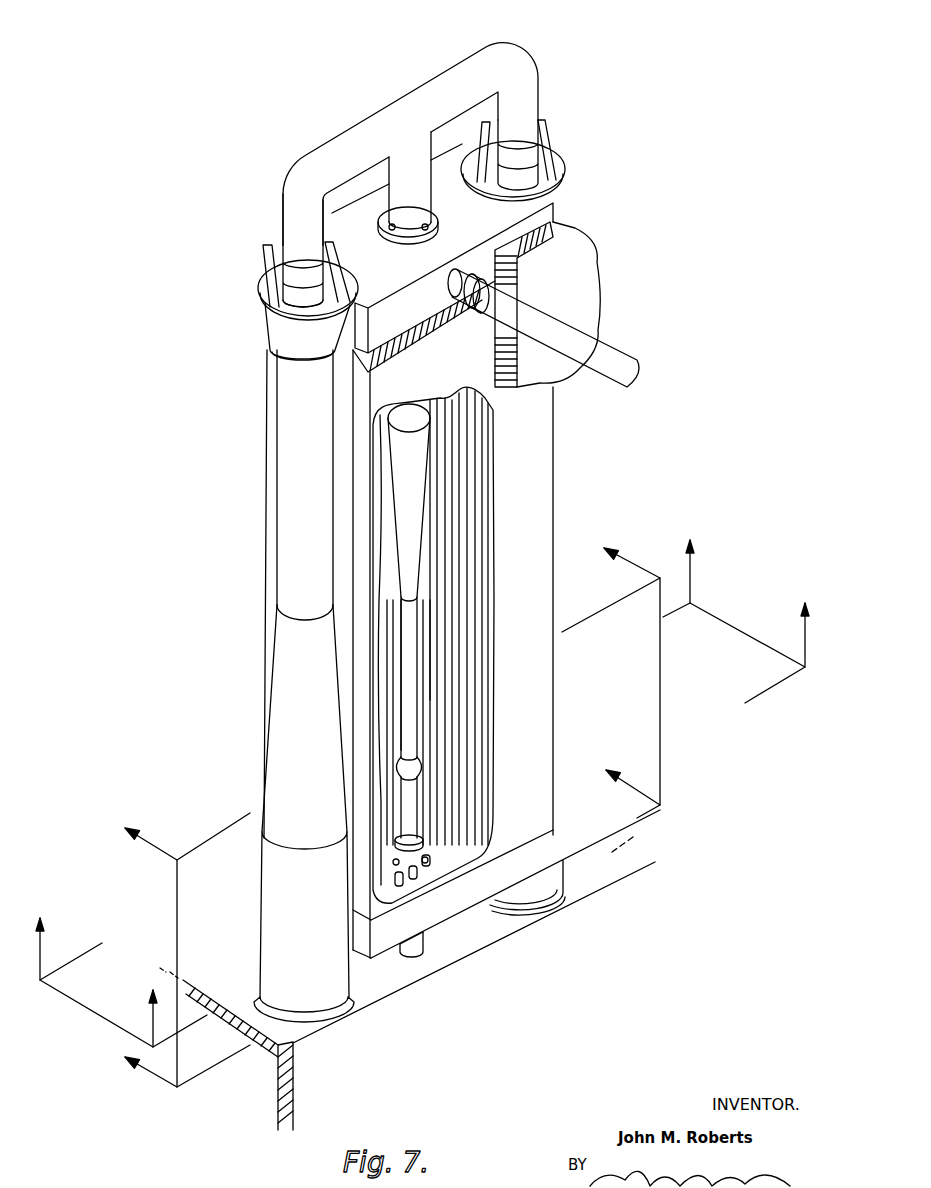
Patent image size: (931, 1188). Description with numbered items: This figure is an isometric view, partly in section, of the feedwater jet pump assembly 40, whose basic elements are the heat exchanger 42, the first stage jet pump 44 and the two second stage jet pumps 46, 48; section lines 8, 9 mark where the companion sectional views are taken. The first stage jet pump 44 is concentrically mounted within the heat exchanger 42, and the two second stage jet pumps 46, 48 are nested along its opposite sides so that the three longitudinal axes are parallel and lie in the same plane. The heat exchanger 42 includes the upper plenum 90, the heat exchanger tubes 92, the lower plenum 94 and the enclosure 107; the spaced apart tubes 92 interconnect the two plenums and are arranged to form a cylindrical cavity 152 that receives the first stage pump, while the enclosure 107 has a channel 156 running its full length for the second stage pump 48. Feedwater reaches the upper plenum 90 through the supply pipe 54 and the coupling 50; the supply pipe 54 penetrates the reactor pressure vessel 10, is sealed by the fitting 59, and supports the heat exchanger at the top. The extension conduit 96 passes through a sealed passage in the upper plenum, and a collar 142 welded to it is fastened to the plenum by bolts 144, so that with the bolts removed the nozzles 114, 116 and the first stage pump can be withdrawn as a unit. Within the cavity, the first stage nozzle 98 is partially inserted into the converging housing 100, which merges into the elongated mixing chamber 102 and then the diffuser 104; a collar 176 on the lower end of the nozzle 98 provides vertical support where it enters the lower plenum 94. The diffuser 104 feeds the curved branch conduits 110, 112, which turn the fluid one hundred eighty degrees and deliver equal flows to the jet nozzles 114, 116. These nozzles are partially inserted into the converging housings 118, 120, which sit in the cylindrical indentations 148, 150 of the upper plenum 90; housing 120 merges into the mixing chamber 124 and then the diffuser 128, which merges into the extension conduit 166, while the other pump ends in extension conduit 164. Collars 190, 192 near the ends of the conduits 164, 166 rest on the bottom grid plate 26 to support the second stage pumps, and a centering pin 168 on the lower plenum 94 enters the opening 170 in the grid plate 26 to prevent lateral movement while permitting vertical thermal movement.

The feedwater jet pump assembly 40 is at (434, 157).
The branch conduit 110 is at (532, 50).
The branch conduit 112 is at (293, 193).
The jet nozzle 114 is at (517, 173).
The extension conduit 96 is at (403, 185).
The second stage jet pump 46 is at (555, 126).
The second stage jet pump 48 is at (268, 275).
The cylindrical shaped indentation 148 is at (553, 177).
The jet nozzle 116 is at (293, 295).
The converging housing 120 is at (277, 330).
The cylindrical shaped indentation 150 is at (270, 360).
The converging housing 118 is at (557, 193).
The upper plenum 90 is at (577, 186).
The collar 142 is at (383, 215).
The bolts 144 is at (443, 218).
The coupling 50 is at (518, 278).
The fitting 59 is at (543, 303).
The reactor pressure vessel 10 is at (583, 328).
The supply pipe 54 is at (620, 360).
The enclosure 107 is at (553, 448).
The heat exchanger 42 is at (494, 594).
The heat exchanger tubes 92 is at (482, 452).
The diffuser 104 is at (418, 505).
The mixing chamber 102 is at (410, 618).
The first stage jet pump 44 is at (418, 633).
The cylindrical cavity 152 is at (432, 648).
The converging housing 100 is at (415, 768).
The nozzle 98 is at (412, 812).
The collar 176 is at (420, 852).
The mixing chamber 124 is at (295, 483).
The channel 156 is at (343, 648).
The diffuser 128 is at (288, 752).
The extension conduit 166 is at (330, 988).
The collar 192 is at (318, 1030).
The bottom grid plate 26 is at (273, 1070).
The lower plenum 94 is at (443, 902).
The extension conduit 164 is at (537, 883).
The collar 190 is at (530, 907).
The centering pin 168 is at (413, 953).
The opening 170 is at (423, 950).
The section line 8- 8 is at (380, 811).
The section line 9- 9 is at (421, 782).